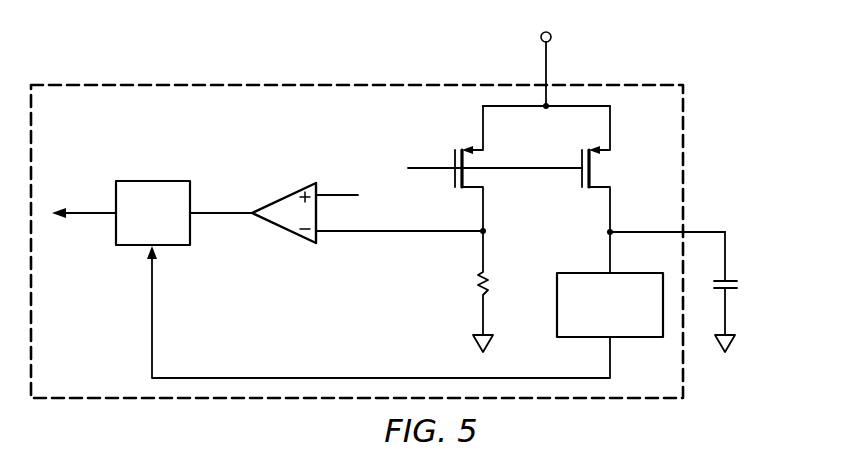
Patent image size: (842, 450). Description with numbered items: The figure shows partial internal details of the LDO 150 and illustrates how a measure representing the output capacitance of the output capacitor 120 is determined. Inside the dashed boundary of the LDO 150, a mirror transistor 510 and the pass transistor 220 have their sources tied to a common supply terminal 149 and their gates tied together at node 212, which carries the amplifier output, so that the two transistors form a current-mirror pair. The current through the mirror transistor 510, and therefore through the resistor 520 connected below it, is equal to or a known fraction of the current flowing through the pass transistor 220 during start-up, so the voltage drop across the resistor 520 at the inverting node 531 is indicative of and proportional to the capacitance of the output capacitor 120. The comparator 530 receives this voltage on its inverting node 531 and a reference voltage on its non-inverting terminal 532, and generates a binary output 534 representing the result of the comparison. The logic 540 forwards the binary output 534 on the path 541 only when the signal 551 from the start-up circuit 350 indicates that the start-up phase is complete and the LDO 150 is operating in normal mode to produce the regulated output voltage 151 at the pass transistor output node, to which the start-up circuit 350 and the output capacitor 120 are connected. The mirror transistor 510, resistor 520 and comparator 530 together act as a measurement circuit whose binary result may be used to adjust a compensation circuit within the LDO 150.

The LDO 150 is at (190, 74).
The logic 540 is at (152, 181).
The path 541 is at (86, 212).
The binary output 534 is at (222, 212).
The comparator 530 is at (284, 198).
The non-inverting terminal 532 is at (325, 194).
The inverting node 531 is at (325, 233).
The supply voltage terminal 149 is at (552, 36).
The mirror transistor 510 is at (454, 158).
The node 212 is at (432, 170).
The pass transistor 220 is at (581, 158).
The regulated output voltage 151 is at (640, 231).
The resistor 520 is at (478, 284).
The output capacitor 120 is at (739, 286).
The start-up circuit 350 is at (636, 338).
The signal 551 is at (382, 377).